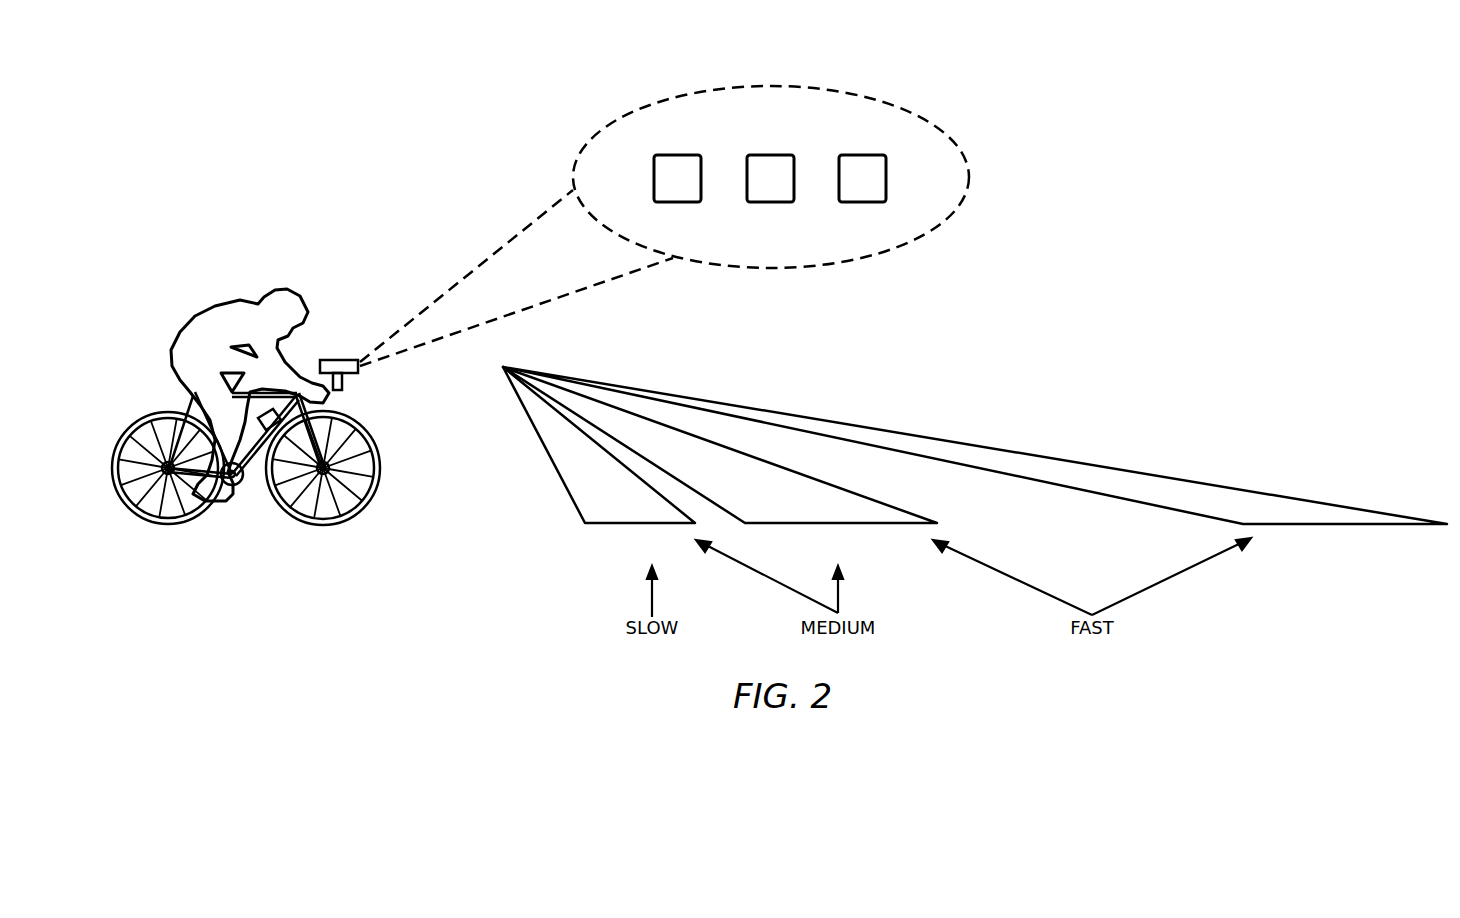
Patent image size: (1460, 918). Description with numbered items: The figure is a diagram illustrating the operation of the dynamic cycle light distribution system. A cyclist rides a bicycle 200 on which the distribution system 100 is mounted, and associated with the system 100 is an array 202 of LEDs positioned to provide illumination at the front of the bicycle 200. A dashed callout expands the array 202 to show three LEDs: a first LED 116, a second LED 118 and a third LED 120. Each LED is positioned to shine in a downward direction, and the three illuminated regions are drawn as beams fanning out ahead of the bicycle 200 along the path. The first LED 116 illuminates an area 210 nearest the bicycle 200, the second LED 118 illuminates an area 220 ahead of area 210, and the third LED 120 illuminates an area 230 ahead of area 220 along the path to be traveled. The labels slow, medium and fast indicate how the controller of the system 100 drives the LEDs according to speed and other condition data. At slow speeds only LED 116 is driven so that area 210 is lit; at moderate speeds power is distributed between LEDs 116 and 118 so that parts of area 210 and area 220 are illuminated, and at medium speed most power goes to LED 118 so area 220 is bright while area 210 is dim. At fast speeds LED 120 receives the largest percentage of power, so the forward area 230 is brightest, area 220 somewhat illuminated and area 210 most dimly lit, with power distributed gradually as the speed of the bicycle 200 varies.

The bicycle 200 is at (277, 64).
The distribution system 100 is at (258, 466).
The array of LEDs 202 is at (347, 376).
The first LED 116 is at (676, 154).
The second LED 118 is at (769, 154).
The third LED 120 is at (861, 154).
The area 210 is at (600, 524).
The area 220 is at (790, 524).
The area 230 is at (1325, 524).